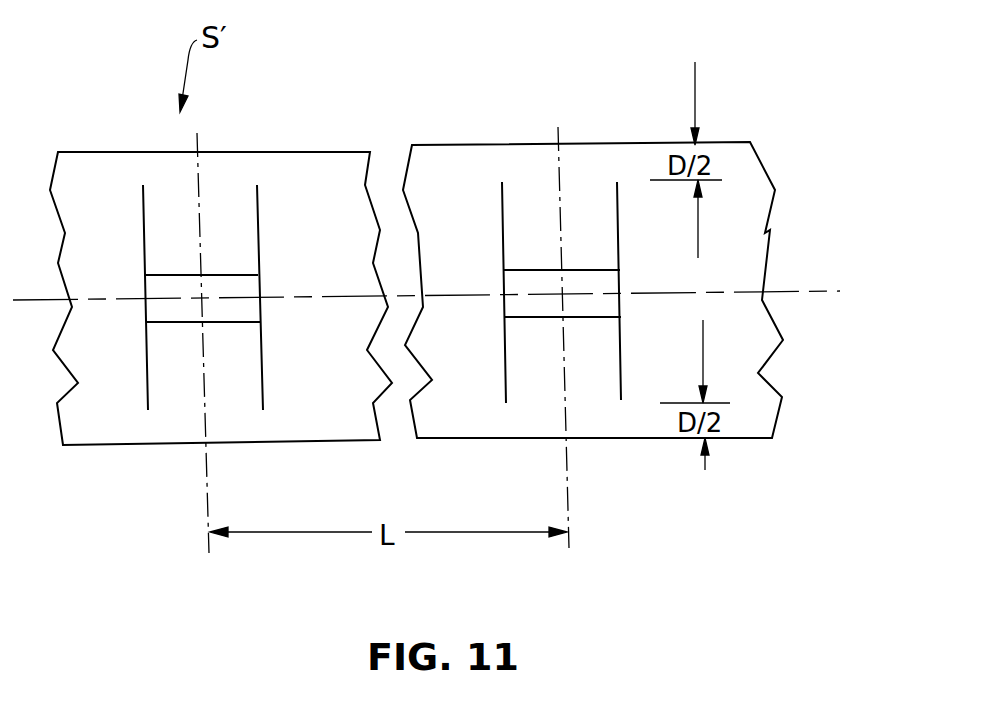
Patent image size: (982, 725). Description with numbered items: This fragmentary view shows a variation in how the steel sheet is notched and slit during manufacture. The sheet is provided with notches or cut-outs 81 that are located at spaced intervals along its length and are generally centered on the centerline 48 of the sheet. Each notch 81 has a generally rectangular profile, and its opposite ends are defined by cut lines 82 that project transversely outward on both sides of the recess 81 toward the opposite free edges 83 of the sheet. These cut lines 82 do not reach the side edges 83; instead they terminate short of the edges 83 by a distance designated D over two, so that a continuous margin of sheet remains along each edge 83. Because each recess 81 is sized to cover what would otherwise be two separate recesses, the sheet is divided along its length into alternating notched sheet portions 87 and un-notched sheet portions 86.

The centerline 48 is at (815, 290).
The notch 81 is at (205, 298).
The cut line 82 is at (533, 395).
The free edge 83 is at (323, 443).
The un-notched sheet portion 86 is at (578, 148).
The notched sheet portion 87 is at (330, 151).